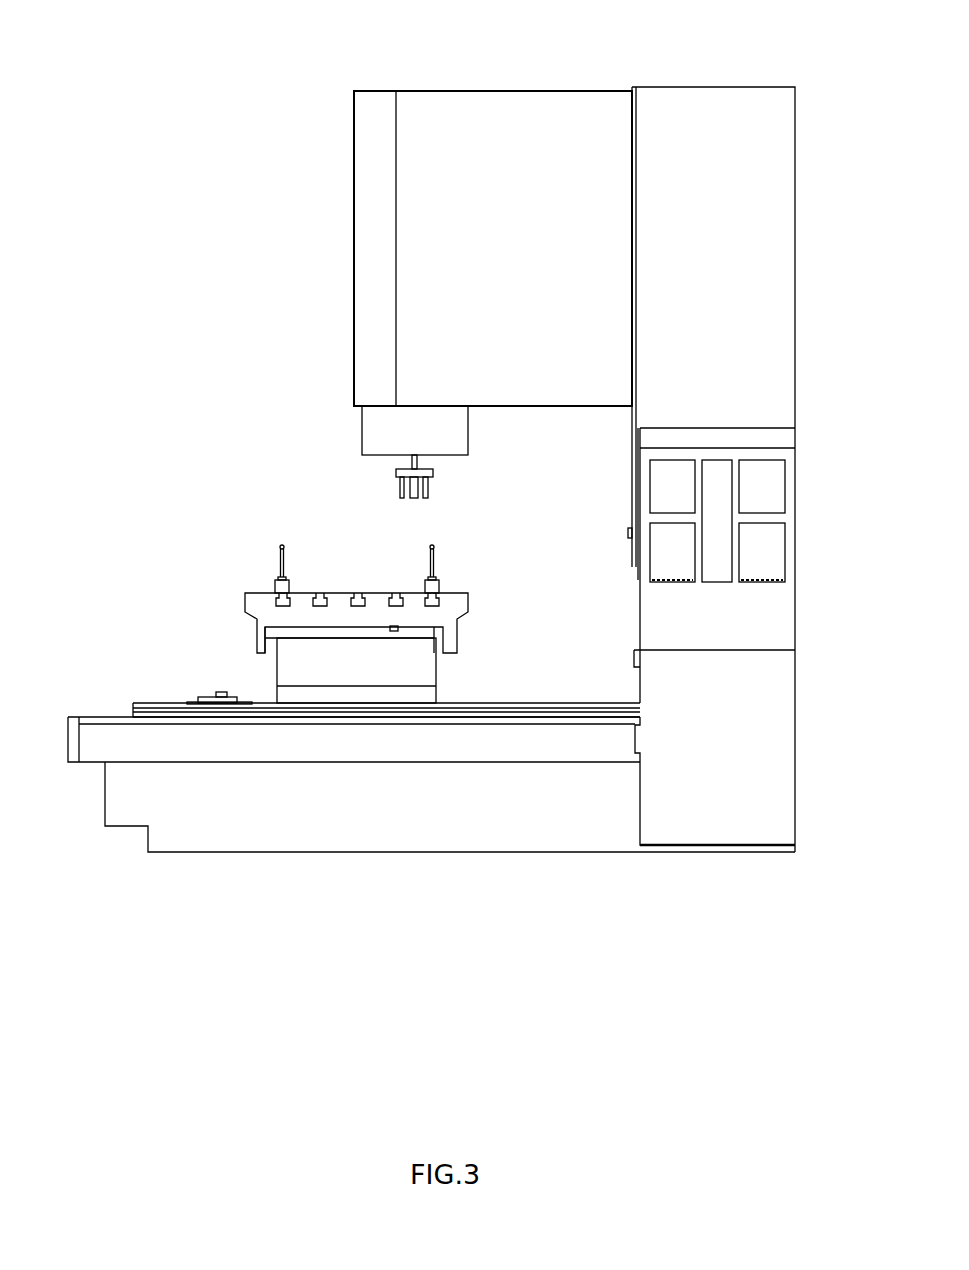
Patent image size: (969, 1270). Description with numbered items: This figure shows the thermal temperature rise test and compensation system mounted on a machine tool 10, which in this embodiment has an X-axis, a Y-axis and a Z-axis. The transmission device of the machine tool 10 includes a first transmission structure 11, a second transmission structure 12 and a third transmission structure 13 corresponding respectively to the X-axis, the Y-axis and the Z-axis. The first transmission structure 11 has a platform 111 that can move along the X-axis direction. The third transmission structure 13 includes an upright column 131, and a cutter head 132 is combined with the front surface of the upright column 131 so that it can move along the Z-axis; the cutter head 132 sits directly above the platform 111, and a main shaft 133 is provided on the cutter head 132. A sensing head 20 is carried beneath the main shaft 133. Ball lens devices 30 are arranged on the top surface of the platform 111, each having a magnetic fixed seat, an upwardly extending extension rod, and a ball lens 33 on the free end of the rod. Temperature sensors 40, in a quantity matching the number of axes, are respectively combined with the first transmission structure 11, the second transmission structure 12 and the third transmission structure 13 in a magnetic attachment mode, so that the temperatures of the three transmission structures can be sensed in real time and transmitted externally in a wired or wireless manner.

The machine tool 10 is at (311, 55).
The first transmission structure 11 is at (237, 628).
The platform 111 is at (263, 593).
The second transmission structure 12 is at (133, 700).
The third transmission structure 13 is at (618, 465).
The upright column 131 is at (778, 203).
The cutter head 132 is at (415, 207).
The main shaft 133 is at (372, 428).
The sensing head 20 is at (378, 485).
The ball lens device 30 is at (450, 553).
The ball lens 33 is at (434, 545).
The temperature sensor 40 is at (221, 692).